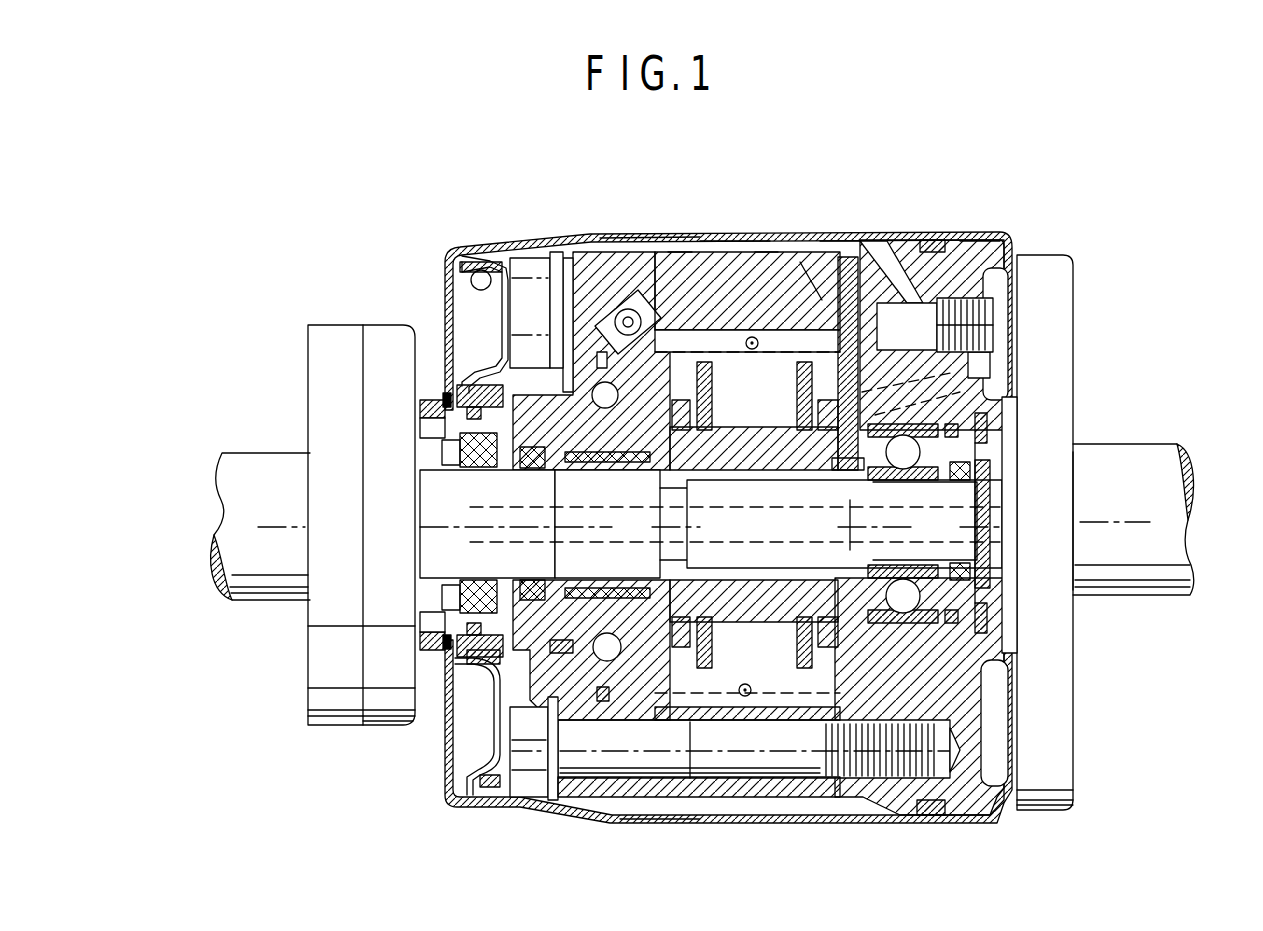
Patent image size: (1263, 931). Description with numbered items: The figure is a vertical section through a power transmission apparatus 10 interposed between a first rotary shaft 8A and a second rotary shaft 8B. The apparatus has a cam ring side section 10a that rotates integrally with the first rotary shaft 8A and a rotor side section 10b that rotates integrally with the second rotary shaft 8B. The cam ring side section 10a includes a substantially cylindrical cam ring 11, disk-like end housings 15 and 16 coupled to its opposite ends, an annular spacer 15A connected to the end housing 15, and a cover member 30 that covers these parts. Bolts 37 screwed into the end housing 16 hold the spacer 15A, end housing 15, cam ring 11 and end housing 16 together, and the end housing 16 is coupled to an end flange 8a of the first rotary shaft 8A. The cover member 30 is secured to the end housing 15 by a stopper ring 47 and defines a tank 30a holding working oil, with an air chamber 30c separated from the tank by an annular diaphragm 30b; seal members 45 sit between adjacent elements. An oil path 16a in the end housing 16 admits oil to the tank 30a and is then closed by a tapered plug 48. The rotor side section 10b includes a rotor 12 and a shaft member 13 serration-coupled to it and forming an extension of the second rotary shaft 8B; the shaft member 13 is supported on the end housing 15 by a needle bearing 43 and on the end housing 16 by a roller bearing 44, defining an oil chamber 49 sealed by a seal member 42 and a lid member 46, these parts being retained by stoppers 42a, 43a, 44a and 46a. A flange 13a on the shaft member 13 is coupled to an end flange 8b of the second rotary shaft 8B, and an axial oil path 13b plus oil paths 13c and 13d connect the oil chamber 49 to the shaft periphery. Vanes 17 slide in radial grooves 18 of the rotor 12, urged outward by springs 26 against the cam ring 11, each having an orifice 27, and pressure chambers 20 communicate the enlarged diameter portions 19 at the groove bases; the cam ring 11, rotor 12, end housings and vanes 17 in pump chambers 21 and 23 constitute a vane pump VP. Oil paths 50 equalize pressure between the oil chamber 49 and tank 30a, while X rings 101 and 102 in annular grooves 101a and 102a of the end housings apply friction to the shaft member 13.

The first rotary shaft 8A is at (1135, 588).
The second rotary shaft 8B is at (265, 590).
The end flange of first rotary shaft 8a is at (1040, 810).
The end flange of second rotary shaft 8b is at (338, 716).
The power transmission apparatus 10 is at (435, 767).
The cam ring side section 10a is at (640, 236).
The rotor side section 10b is at (358, 310).
The cam ring 11 is at (785, 265).
The rotor 12 is at (817, 782).
The shaft member 13 is at (1004, 550).
The flange 13a is at (391, 740).
The oil path 13b is at (1040, 474).
The oil path 13c is at (850, 505).
The oil path 13d is at (578, 497).
The end housing 15 is at (645, 252).
The spacer 15A is at (568, 258).
The end housing 16 is at (895, 255).
The oil path 16a is at (975, 240).
The vanes 17 is at (813, 300).
The radial grooves 18 is at (747, 340).
The enlarged diameter portion 19 is at (750, 470).
The pressure chambers 20 is at (830, 432).
The pump chamber 21 is at (765, 354).
The pump chamber 23 is at (727, 670).
The springs 26 is at (706, 432).
The orifice 27 is at (765, 252).
The cover member 30 is at (735, 250).
The tank 30a is at (835, 248).
The annular diaphragm 30b is at (462, 279).
The air chamber 30c is at (462, 340).
The bolts 37 is at (535, 266).
The seal member 42 is at (479, 586).
The stopper 42a is at (450, 597).
The bearing 43 is at (621, 524).
The stopper 43a is at (565, 464).
The bearing 44 is at (895, 780).
The stopper 44a is at (978, 517).
The seal member 45 is at (466, 683).
The lid member 46 is at (1006, 474).
The stopper 46a is at (1006, 608).
The stopper ring 47 is at (450, 388).
The tapered plug 48 is at (980, 368).
The oil chamber 49 is at (1010, 690).
The oil paths 50 is at (443, 400).
The frictional force applying mechanism 101 is at (1008, 447).
The annular groove 101a is at (1060, 430).
The frictional force applying mechanism 102 is at (420, 436).
The annular groove 102a is at (420, 410).
The vane pump VP is at (662, 795).